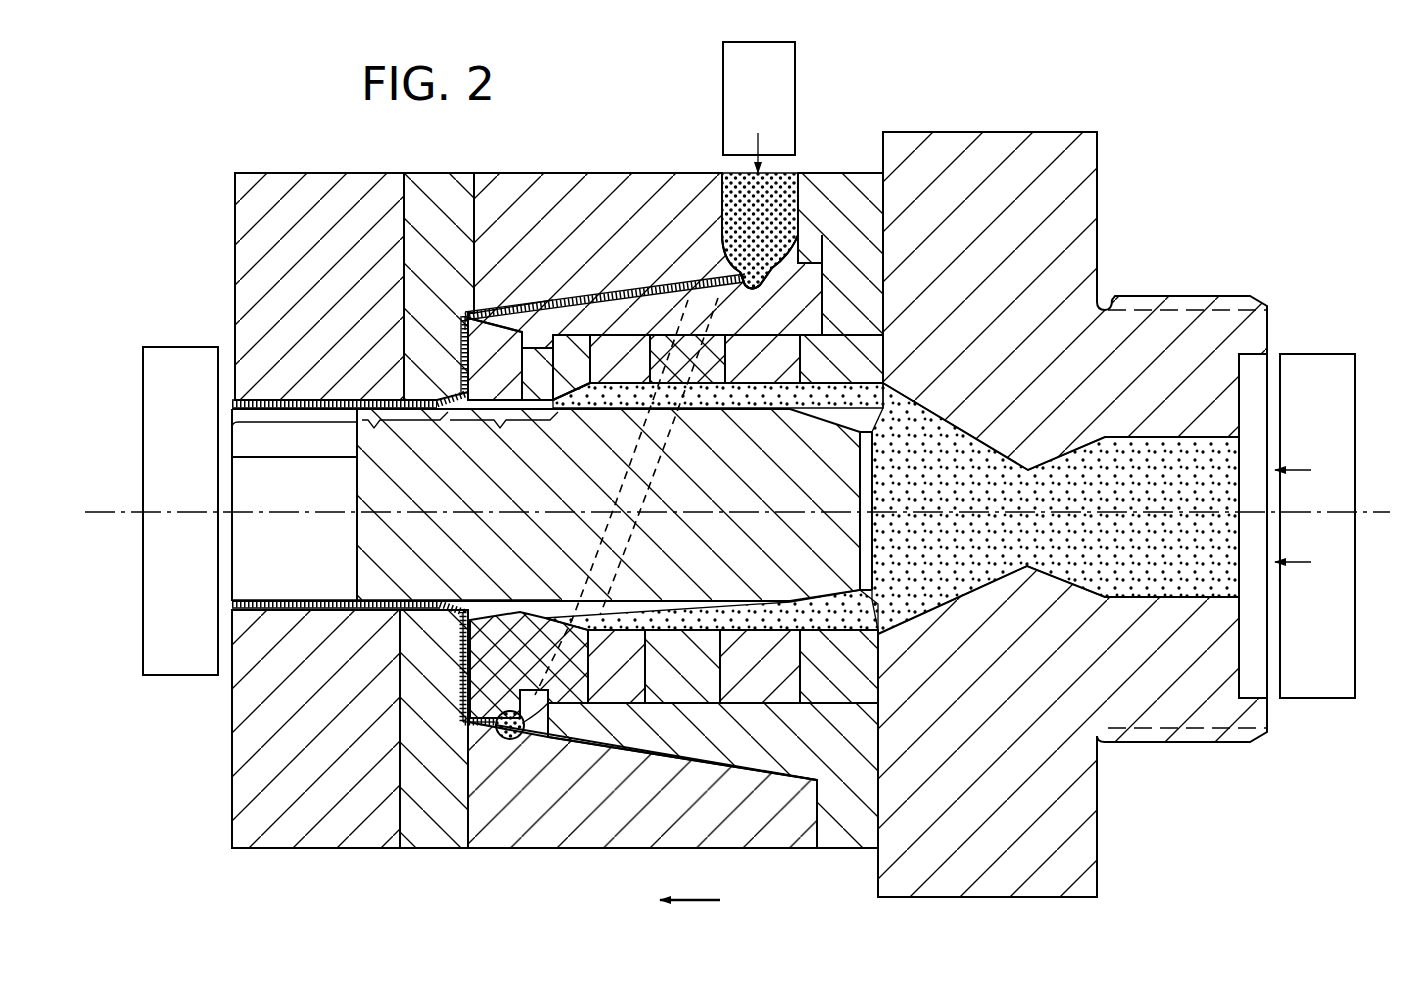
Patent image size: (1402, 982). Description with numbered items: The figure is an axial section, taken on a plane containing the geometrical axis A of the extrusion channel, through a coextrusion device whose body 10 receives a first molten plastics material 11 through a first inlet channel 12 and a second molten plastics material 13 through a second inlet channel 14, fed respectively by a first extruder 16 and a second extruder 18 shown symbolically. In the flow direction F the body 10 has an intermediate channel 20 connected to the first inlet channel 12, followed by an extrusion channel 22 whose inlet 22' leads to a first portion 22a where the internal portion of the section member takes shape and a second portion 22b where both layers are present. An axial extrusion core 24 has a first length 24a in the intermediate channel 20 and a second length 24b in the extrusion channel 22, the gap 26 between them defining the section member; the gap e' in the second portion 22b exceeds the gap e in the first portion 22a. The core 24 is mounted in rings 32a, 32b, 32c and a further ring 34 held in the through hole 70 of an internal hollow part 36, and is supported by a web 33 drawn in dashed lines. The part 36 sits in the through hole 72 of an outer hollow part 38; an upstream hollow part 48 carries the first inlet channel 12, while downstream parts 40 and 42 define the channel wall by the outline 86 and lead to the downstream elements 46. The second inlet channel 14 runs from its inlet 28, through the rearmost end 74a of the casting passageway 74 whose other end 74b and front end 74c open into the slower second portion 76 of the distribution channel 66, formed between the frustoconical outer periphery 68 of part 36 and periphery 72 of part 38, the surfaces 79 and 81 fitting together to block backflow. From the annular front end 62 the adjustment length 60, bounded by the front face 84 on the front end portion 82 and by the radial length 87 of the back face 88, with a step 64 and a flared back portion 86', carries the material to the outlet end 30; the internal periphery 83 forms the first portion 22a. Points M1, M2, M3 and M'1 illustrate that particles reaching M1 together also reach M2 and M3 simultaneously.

The body 10 is at (945, 125).
The first molten plastics material 11 is at (1055, 508).
The first inlet channel 12 is at (1163, 432).
The second molten plastics material 13 is at (728, 185).
The second inlet channel 14 is at (716, 240).
The first extruder 16 is at (1318, 370).
The second extruder 18 is at (788, 80).
The intermediate channel 20 is at (875, 640).
The extrusion channel 22 is at (363, 661).
The inlet of the extrusion channel 22' is at (718, 429).
The first extrusion channel portion 22a is at (504, 436).
The second portion of the extrusion channel 22b is at (340, 436).
The axial extrusion core 24 is at (552, 505).
The first length of the core 24a is at (812, 622).
The second length of the core 24b is at (375, 620).
The gap 26 is at (388, 403).
The inlet of the second inlet channel 28 is at (790, 185).
The outlet end of the second inlet channel 30 is at (446, 392).
The ring 32a is at (686, 340).
The ring 32b is at (624, 358).
The ring 32c is at (587, 345).
The supporting web 33 is at (574, 416).
The ring 34 is at (832, 350).
The internal hollow part 36 is at (872, 283).
The outer hollow part 38 is at (540, 185).
The downstream part 40 is at (436, 183).
The downstream part 42 is at (313, 185).
The downstream elements of the extrusion die 46 is at (170, 348).
The upstream hollow part 48 is at (1068, 195).
The adjustment length 60 is at (466, 332).
The inlet of the adjustment length 62 is at (470, 312).
The step 64 is at (476, 372).
The distribution channel 66 is at (646, 283).
The outer periphery of the inner hollow part 68 is at (645, 760).
The through hole 70 is at (765, 345).
The through hole of the outer hollow part 72 is at (578, 298).
The casting passageway 74 is at (640, 508).
The rearmost first end of the passageway 74a is at (770, 282).
The end of the passageway 74b is at (530, 740).
The front end of the casting passageway 74c is at (735, 278).
The second portion of the distribution channel 76 is at (543, 297).
The second frustoconical surface 79 is at (778, 777).
The second frustoconical surface 81 is at (712, 768).
The front end portion 82 is at (520, 600).
The internal periphery 83 is at (490, 400).
The front face 84 is at (478, 650).
The outline of the through hole 86 is at (434, 727).
The rearwardly flared back portion 86' is at (434, 667).
The substantially radial length 87 is at (480, 600).
The back face 88 is at (478, 244).
The point M1 is at (798, 263).
The point M2 is at (468, 302).
The point M3 is at (468, 735).
The point M'1 is at (507, 751).
The gap e is at (550, 573).
The gap e' is at (296, 572).
The geometrical axis A is at (1370, 520).
The flow direction arrow F is at (690, 885).